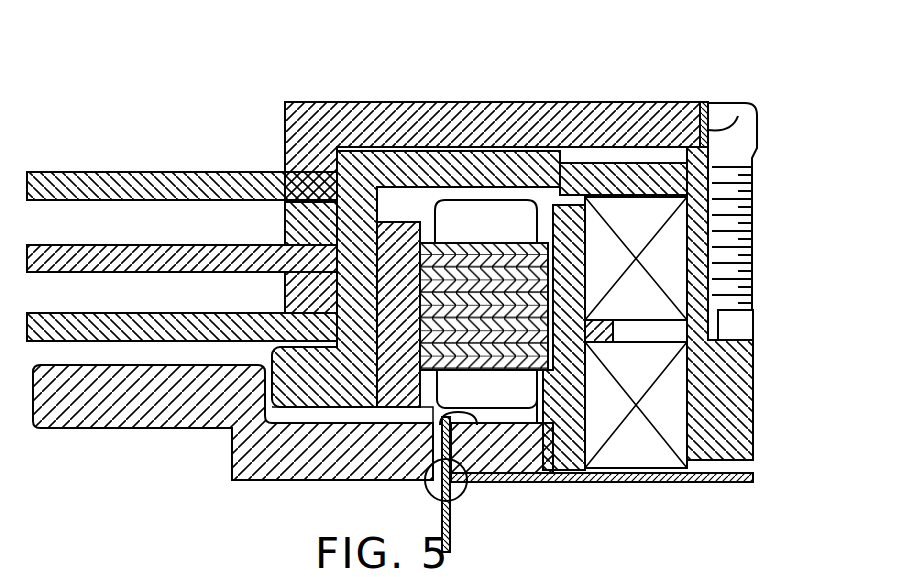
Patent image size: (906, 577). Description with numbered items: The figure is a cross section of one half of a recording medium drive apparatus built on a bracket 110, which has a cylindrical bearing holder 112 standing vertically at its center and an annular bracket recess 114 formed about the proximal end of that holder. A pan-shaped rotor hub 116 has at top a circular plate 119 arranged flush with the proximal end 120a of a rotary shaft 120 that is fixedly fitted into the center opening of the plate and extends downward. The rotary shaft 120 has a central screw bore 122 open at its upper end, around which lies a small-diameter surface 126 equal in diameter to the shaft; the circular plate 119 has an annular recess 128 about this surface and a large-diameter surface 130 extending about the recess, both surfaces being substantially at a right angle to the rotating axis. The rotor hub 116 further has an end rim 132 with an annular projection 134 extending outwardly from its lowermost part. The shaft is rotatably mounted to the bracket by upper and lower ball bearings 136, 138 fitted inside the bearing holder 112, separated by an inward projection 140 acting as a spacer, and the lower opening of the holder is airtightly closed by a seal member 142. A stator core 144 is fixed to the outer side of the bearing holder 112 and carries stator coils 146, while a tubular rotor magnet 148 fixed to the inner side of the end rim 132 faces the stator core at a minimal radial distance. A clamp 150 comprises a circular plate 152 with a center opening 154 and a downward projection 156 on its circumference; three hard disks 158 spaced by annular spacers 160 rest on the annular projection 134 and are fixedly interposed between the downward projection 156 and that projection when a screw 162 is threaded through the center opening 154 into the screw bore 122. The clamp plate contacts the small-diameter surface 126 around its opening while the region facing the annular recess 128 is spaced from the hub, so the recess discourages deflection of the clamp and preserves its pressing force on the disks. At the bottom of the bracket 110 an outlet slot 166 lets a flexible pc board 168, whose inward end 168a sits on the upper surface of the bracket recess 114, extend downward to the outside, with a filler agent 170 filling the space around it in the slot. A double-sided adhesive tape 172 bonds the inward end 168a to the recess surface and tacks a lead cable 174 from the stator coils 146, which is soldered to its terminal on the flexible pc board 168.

The bracket 110 is at (311, 443).
The bearing holder 112 is at (585, 218).
The bracket recess 114 is at (378, 425).
The rotor hub 116 is at (489, 109).
The circular plate 119 is at (519, 100).
The rotary shaft 120 is at (742, 446).
The proximal end of rotary shaft 120a is at (795, 190).
The screw bore 122 is at (745, 324).
The small-diameter surface 126 is at (702, 104).
The annular recess 128 is at (610, 170).
The large-diameter surface 130 is at (492, 109).
The end rim 132 is at (345, 222).
The annular projection 134 is at (256, 422).
The upper ball bearing 136 is at (629, 313).
The lower ball bearing 138 is at (654, 458).
The inward projection 140 is at (637, 431).
The seal member 142 is at (734, 483).
The stator core 144 is at (556, 246).
The stator coils 146 is at (520, 205).
The rotor magnet 148 is at (385, 222).
The clamp 150 is at (489, 109).
The circular plate of clamp 152 is at (492, 109).
The center opening 154 is at (710, 104).
The downward projection 156 is at (285, 140).
The hard disks 158 is at (98, 244).
The annular spacers 160 is at (285, 290).
The screw 162 is at (742, 180).
The outlet slot 166 is at (464, 430).
The flexible pc board 168 is at (505, 489).
The inward end of flexible pc board 168a is at (452, 526).
The filler agent 170 is at (432, 480).
The double-sided adhesive tape 172 is at (543, 470).
The lead cable 174 is at (527, 408).